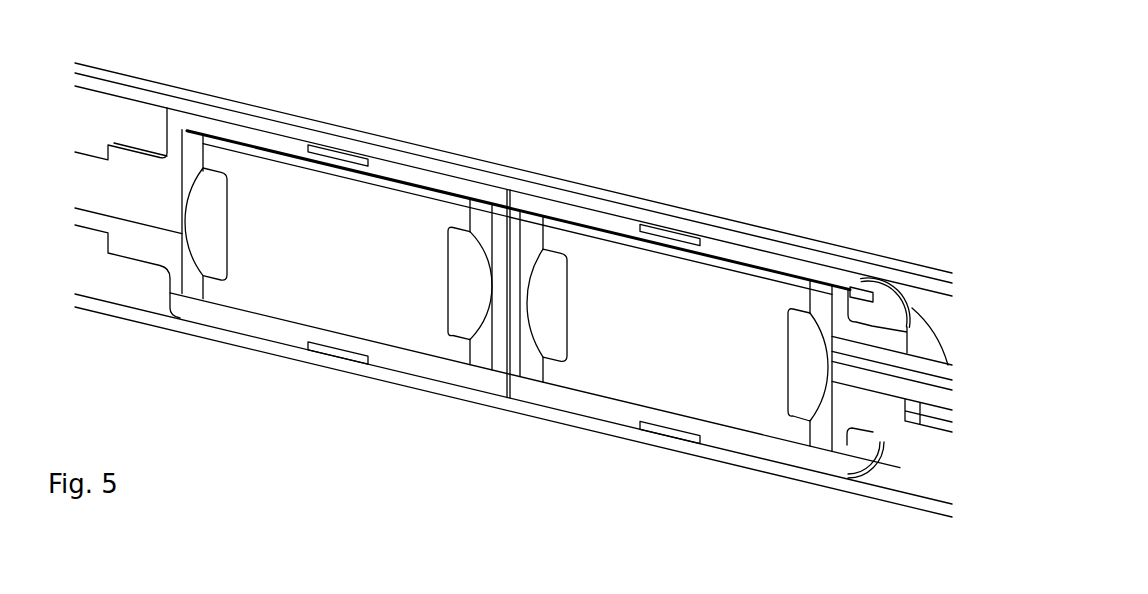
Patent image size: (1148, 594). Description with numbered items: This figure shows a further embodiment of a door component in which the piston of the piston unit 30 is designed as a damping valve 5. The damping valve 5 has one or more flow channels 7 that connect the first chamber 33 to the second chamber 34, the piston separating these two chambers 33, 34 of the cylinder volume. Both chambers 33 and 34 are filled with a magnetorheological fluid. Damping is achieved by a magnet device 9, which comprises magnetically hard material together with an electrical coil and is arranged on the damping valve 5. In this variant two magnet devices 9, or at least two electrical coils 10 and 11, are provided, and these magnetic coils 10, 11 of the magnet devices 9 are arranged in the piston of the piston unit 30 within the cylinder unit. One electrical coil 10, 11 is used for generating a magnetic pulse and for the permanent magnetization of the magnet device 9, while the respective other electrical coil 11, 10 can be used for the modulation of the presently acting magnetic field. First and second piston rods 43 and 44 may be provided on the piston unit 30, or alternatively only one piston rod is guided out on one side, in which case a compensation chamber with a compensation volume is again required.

The damping valve 5 is at (556, 182).
The flow channel 7 is at (278, 155).
The magnet device 9 is at (655, 372).
The electrical coil 10 is at (463, 312).
The electrical coil 11 is at (803, 398).
The piston unit 30 is at (463, 142).
The first chamber 33 is at (142, 128).
The second chamber 34 is at (915, 308).
The first piston rod 43 is at (83, 167).
The second piston rod 44 is at (948, 330).